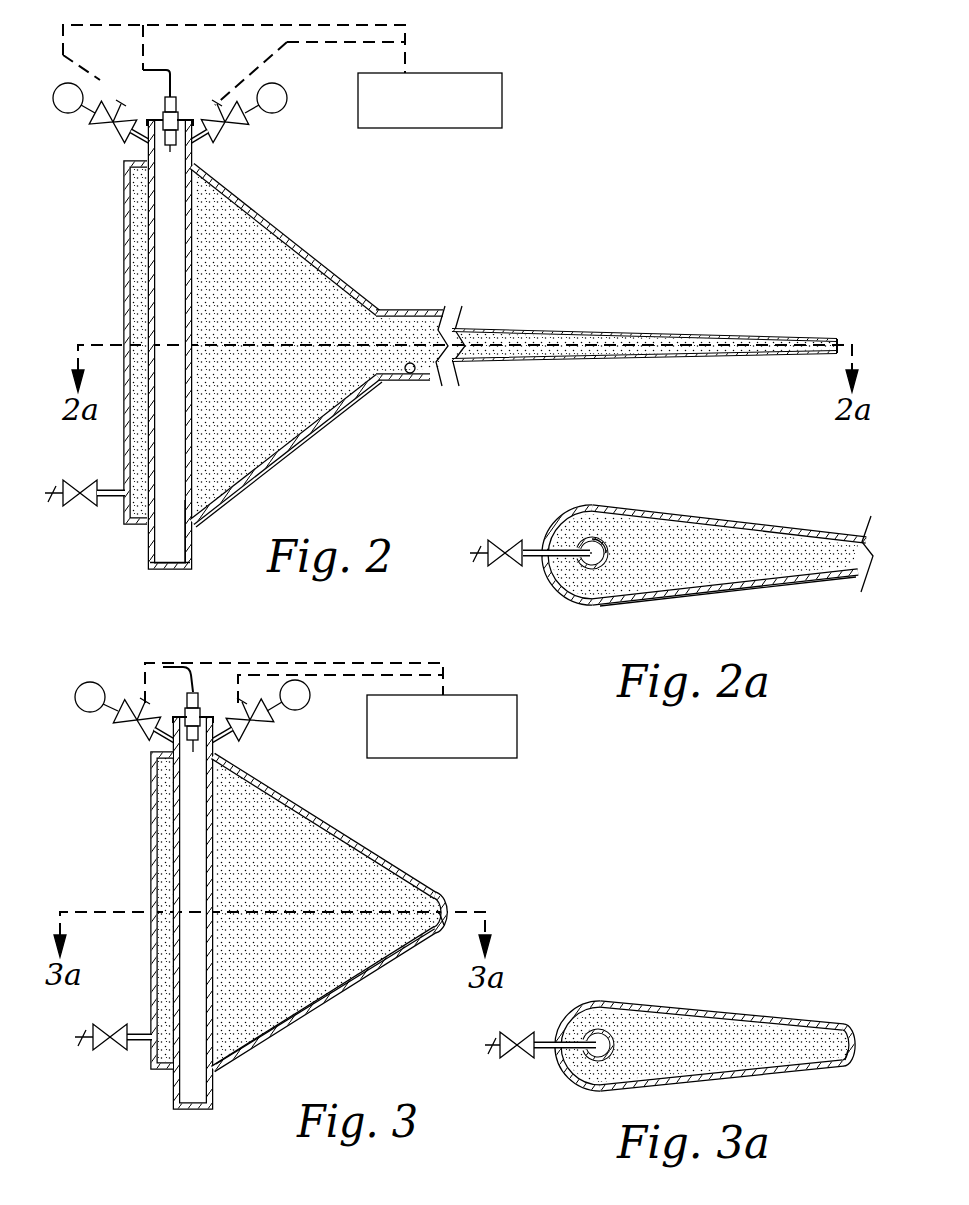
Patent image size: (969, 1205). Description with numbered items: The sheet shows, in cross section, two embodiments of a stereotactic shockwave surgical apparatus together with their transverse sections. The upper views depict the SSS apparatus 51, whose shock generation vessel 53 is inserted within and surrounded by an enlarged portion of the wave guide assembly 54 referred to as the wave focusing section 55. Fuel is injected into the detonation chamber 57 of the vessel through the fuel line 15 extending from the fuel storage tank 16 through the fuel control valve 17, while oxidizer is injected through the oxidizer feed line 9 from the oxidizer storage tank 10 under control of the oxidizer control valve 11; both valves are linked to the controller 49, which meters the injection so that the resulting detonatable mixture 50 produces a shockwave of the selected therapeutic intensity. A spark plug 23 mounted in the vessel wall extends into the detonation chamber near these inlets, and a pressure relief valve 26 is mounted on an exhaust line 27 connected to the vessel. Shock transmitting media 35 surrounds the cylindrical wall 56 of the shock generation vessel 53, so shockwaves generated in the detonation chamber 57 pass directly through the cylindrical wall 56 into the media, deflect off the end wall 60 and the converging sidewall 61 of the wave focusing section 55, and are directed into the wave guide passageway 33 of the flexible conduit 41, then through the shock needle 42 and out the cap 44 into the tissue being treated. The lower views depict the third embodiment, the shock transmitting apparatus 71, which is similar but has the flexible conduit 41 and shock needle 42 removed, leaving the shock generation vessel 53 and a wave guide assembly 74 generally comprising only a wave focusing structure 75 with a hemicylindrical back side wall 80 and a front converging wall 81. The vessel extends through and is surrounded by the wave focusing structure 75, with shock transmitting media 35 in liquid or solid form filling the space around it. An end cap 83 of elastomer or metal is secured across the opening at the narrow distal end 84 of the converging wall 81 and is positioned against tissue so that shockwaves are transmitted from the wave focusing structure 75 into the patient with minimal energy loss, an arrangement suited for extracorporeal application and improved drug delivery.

In FIG. 2, the oxidizer feed line 9 is at (200, 142).
In FIG. 3, the oxidizer feed line 9 is at (238, 748).
In FIG. 2, the oxidizer storage tank 10 is at (287, 101).
In FIG. 3, the oxidizer storage tank 10 is at (308, 688).
In FIG. 2, the oxidizer control valve 11 is at (238, 133).
In FIG. 3, the oxidizer control valve 11 is at (248, 706).
In FIG. 2, the fuel line 15 is at (130, 88).
In FIG. 3, the fuel line 15 is at (160, 738).
In FIG. 2, the fuel storage tank 16 is at (67, 114).
In FIG. 3, the fuel storage tank 16 is at (80, 683).
In FIG. 2, the fuel control valve 17 is at (113, 137).
In FIG. 3, the fuel control valve 17 is at (118, 730).
In FIG. 2, the spark plug 23 is at (180, 105).
In FIG. 3, the spark plug 23 is at (200, 693).
In FIG. 2, the pressure relief valve 26 is at (80, 481).
In FIG. 2A, the pressure relief valve 26 is at (505, 568).
In FIG. 3, the pressure relief valve 26 is at (112, 1052).
In FIG. 3A, the pressure relief valve 26 is at (515, 1060).
In FIG. 2, the exhaust line 27 is at (110, 497).
In FIG. 2, the wave guide passageway 33 is at (415, 372).
In FIG. 2, the shock transmitting media 35 is at (290, 258).
In FIG. 3, the shock transmitting media 35 is at (335, 858).
In FIG. 2, the flexible conduit 41 is at (420, 311).
In FIG. 2A, the flexible conduit 41 is at (857, 592).
In FIG. 2, the shock needle 42 is at (693, 339).
In FIG. 2, the cap 44 is at (842, 339).
In FIG. 2, the controller 49 is at (502, 88).
In FIG. 3, the controller 49 is at (517, 712).
In FIG. 2, the detonatable mixture 50 is at (165, 250).
In FIG. 3, the detonatable mixture 50 is at (185, 862).
In FIG. 2, the SSS apparatus 51 is at (448, 193).
In FIG. 2A, the SSS apparatus 51 is at (720, 473).
In FIG. 2, the shock generation vessel 53 is at (205, 236).
In FIG. 2A, the shock generation vessel 53 is at (613, 570).
In FIG. 3, the shock generation vessel 53 is at (220, 832).
In FIG. 2, the wave guide assembly 54 is at (387, 384).
In FIG. 2A, the wave guide assembly 54 is at (806, 520).
In FIG. 2, the wave focusing section 55 is at (300, 448).
In FIG. 2A, the wave focusing section 55 is at (724, 596).
In FIG. 2, the cylindrical wall 56 is at (190, 500).
In FIG. 2A, the cylindrical wall 56 is at (598, 537).
In FIG. 2, the detonation chamber 57 is at (181, 568).
In FIG. 2A, the detonation chamber 57 is at (588, 545).
In FIG. 2, the end wall 60 is at (123, 322).
In FIG. 2A, the end wall 60 is at (556, 587).
In FIG. 2, the converging sidewall 61 is at (263, 472).
In FIG. 2A, the converging sidewall 61 is at (772, 588).
In FIG. 3, the shock transmitting apparatus 71 is at (140, 1124).
In FIG. 3, the wave guide assembly 74 is at (273, 1058).
In FIG. 3A, the wave guide assembly 74 is at (750, 1092).
In FIG. 3, the wave focusing structure 75 is at (362, 988).
In FIG. 3A, the wave focusing structure 75 is at (692, 1010).
In FIG. 3, the back side wall 80 is at (150, 925).
In FIG. 3A, the back side wall 80 is at (563, 1020).
In FIG. 3, the front converging wall 81 is at (316, 1008).
In FIG. 3A, the front converging wall 81 is at (748, 1020).
In FIG. 3, the end cap 83 is at (446, 900).
In FIG. 3A, the end cap 83 is at (846, 1024).
In FIG. 3, the distal end 84 is at (440, 935).
In FIG. 3A, the distal end 84 is at (844, 1066).